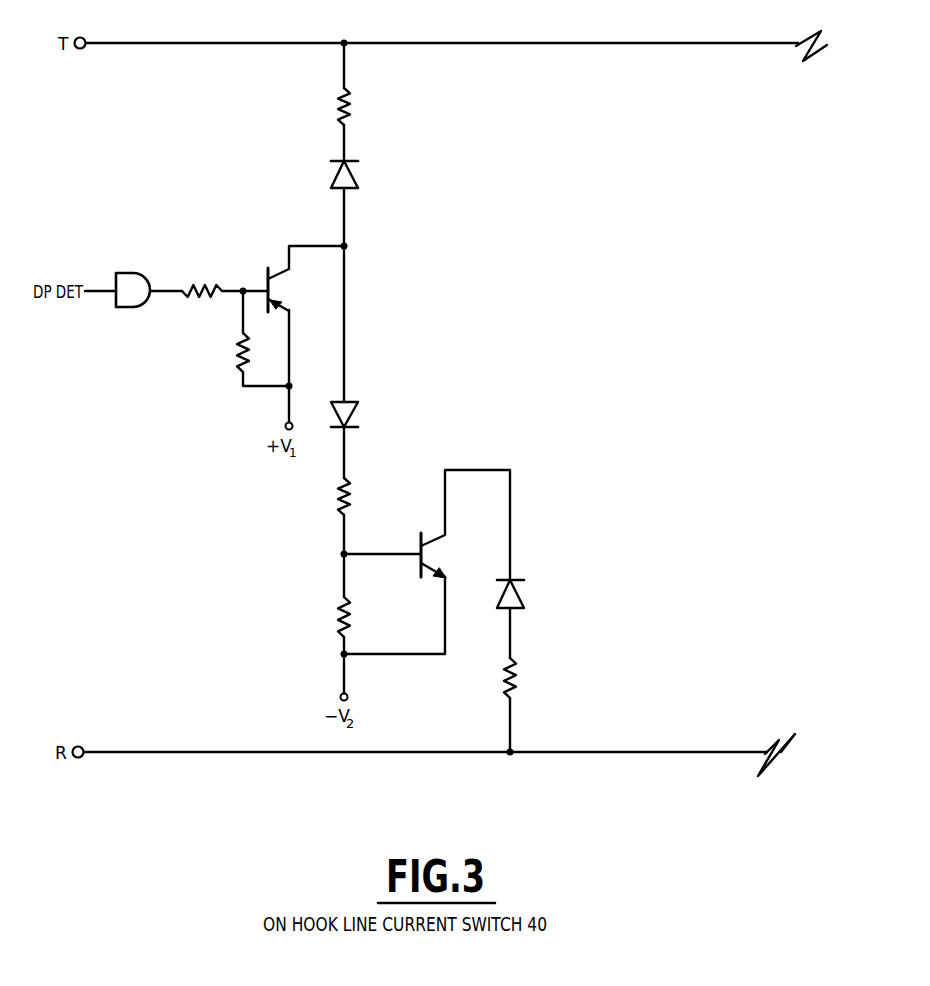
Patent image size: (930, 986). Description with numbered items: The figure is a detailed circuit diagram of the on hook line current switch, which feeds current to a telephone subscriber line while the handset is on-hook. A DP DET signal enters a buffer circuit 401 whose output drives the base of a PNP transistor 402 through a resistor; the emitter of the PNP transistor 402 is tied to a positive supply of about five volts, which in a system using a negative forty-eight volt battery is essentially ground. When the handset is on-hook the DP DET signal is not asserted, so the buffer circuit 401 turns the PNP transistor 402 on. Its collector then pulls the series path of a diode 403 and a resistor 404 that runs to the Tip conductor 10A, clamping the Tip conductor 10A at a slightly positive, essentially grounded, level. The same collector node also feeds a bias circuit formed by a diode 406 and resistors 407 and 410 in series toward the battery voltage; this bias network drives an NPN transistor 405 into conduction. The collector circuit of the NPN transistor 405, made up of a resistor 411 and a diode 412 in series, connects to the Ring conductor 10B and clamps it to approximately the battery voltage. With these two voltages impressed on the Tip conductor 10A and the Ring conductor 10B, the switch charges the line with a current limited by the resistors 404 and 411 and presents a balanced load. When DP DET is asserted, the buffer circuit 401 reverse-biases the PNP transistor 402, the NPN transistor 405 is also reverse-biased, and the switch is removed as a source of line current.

The Tip conductor 10A is at (463, 43).
The Ring conductor 10B is at (312, 754).
The buffer circuit 401 is at (131, 271).
The PNP transistor 402 is at (300, 289).
The diode 403 is at (361, 185).
The resistor 404 is at (352, 112).
The NPN transistor 405 is at (436, 549).
The diode 406 is at (358, 407).
The resistor 407 is at (338, 498).
The resistor 410 is at (338, 612).
The resistor 411 is at (512, 690).
The diode 412 is at (523, 598).